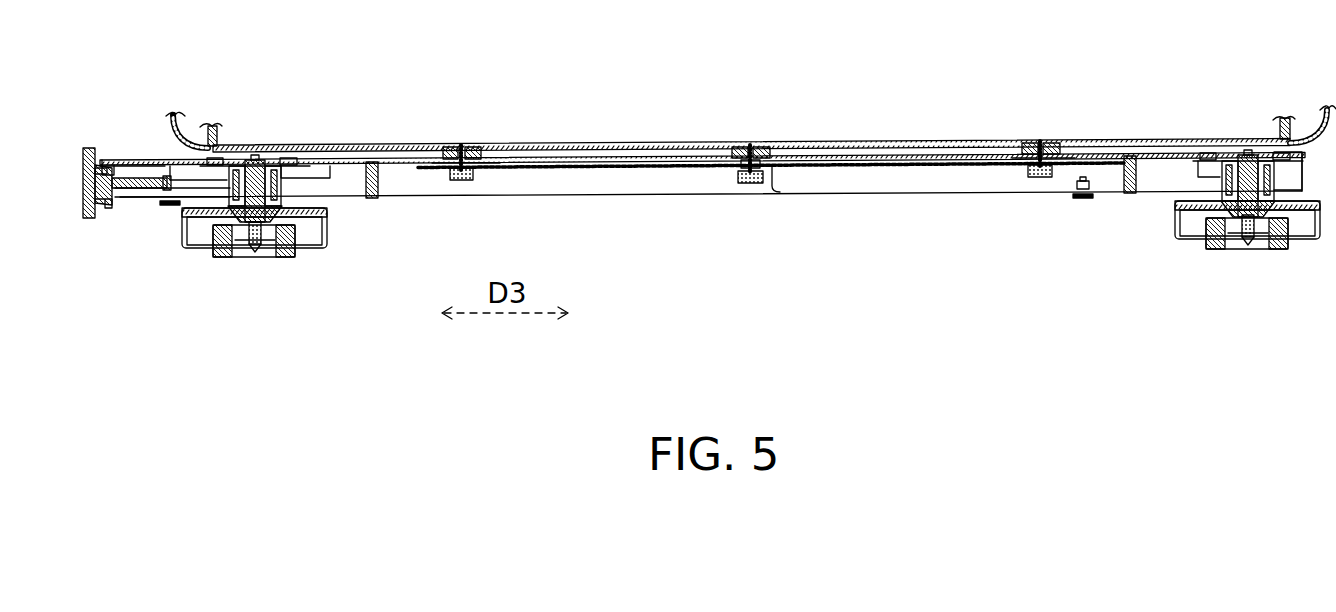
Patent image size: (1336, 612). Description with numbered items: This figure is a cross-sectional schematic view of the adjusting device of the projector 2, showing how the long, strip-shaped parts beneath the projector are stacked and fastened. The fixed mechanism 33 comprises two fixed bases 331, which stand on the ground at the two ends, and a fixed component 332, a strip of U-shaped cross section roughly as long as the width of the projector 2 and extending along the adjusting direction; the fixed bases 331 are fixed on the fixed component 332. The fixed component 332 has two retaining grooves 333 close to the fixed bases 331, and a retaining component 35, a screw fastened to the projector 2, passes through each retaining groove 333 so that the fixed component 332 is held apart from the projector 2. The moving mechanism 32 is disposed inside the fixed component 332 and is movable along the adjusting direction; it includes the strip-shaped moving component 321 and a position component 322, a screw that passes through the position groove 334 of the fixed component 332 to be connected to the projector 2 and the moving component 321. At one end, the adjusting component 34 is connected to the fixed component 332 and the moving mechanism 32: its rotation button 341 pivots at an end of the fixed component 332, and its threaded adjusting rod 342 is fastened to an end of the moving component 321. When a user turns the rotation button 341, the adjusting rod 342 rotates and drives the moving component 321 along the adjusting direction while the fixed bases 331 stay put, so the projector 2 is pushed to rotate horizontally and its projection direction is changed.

The projector 2 is at (1303, 118).
The moving mechanism 32 is at (628, 255).
The moving component 321 is at (655, 180).
The position component 322 is at (752, 187).
The fixed mechanism 33 is at (946, 222).
The fixed base 331 is at (290, 258).
The fixed component 332 is at (884, 177).
The retaining groove 333 is at (489, 158).
The position groove 334 is at (782, 158).
The adjusting component 34 is at (104, 239).
The rotation button 341 is at (88, 147).
The adjusting rod 342 is at (138, 192).
The retaining component 35 is at (458, 184).